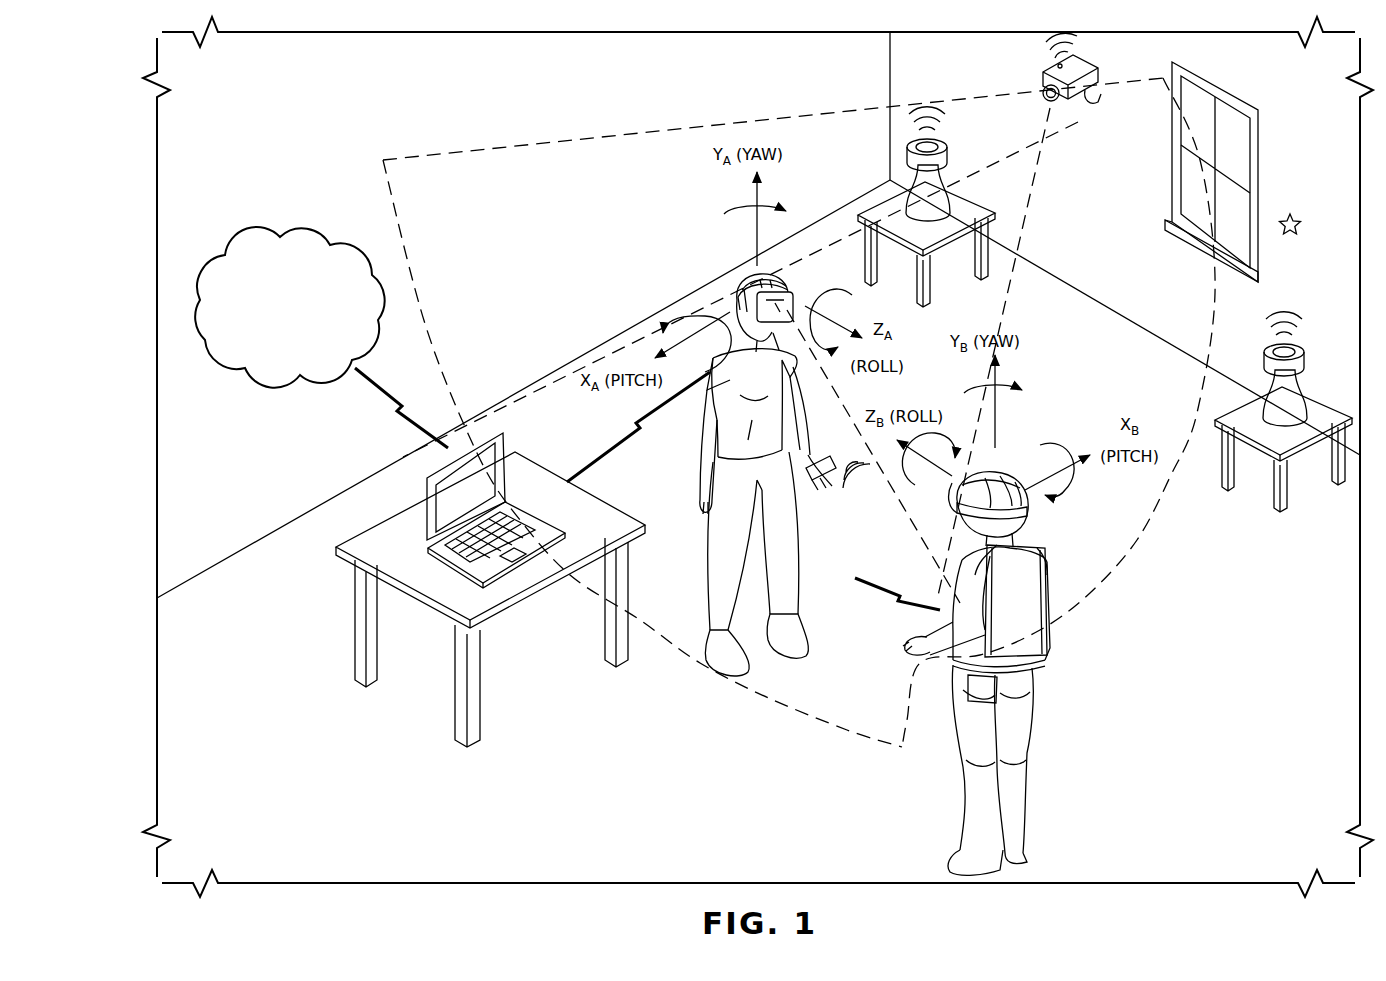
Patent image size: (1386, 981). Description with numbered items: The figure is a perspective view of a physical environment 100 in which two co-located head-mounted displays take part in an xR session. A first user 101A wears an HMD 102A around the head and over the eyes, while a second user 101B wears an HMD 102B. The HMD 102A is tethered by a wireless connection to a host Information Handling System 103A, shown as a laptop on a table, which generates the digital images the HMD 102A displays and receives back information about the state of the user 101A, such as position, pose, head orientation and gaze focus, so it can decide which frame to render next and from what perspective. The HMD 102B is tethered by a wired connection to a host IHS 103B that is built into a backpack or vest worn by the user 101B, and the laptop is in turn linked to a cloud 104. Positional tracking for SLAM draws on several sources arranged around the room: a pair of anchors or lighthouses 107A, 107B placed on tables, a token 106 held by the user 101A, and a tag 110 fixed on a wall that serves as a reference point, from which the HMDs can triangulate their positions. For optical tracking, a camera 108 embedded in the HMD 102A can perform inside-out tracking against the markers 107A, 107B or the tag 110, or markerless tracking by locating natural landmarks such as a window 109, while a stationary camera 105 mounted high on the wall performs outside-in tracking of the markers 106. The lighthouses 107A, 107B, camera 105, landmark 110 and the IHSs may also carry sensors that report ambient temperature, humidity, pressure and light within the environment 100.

The physical environment 100 is at (153, 196).
The user 101A is at (706, 462).
The user 101B is at (1030, 764).
The HMD 102A is at (753, 275).
The HMD 102B is at (945, 505).
The host Information Handling System 103A is at (426, 492).
The host Information Handling System 103B is at (1040, 645).
The cloud 104 is at (308, 340).
The camera 105 is at (1098, 72).
The token 106 is at (838, 478).
The anchor or lighthouse 107A is at (950, 152).
The anchor or lighthouse 107B is at (1303, 360).
The camera 108 is at (791, 284).
The window 109 is at (1258, 162).
The tag 110 is at (1298, 218).